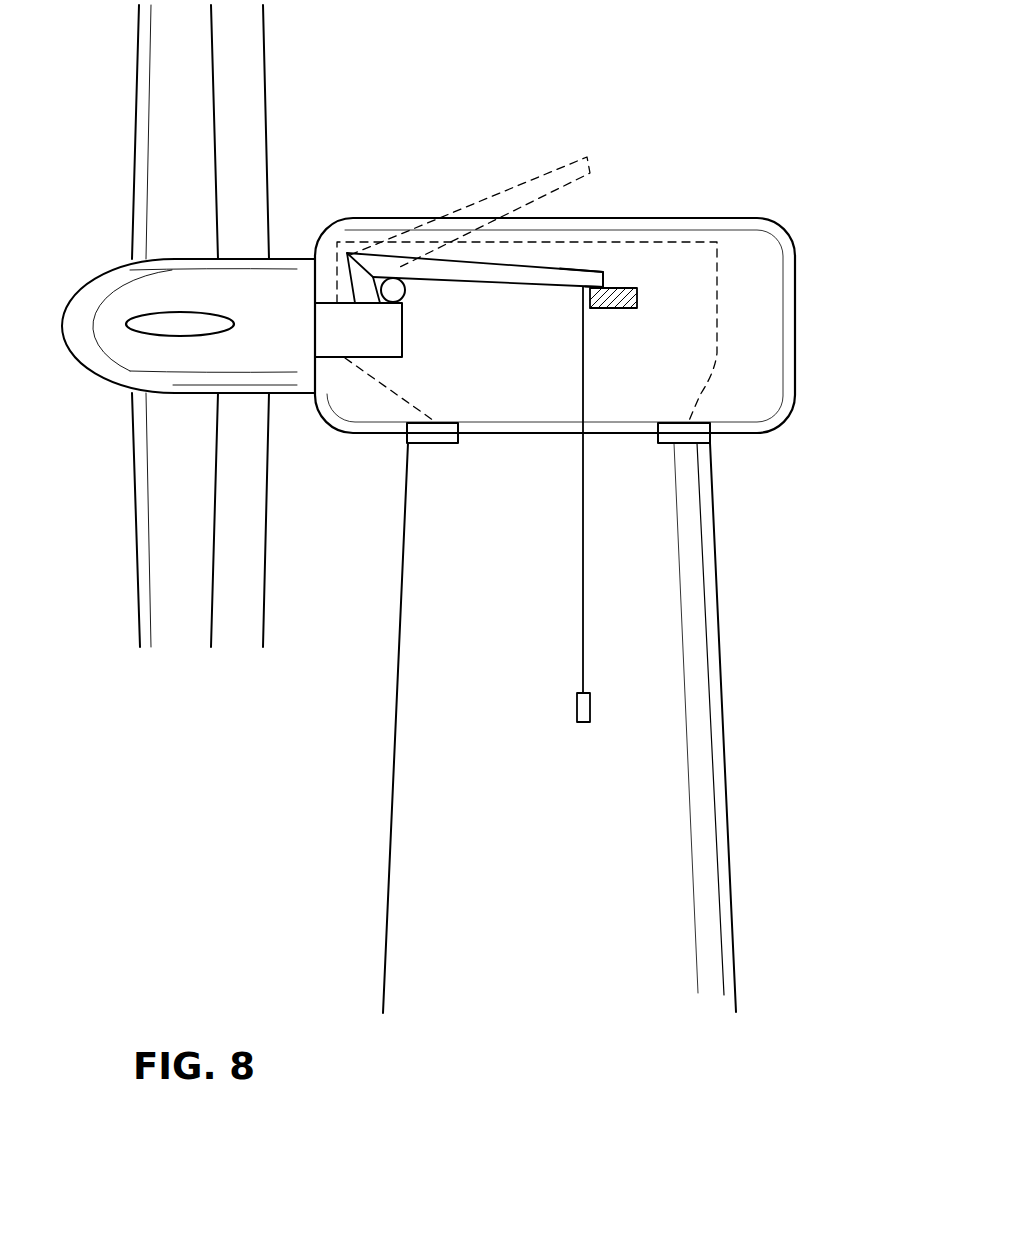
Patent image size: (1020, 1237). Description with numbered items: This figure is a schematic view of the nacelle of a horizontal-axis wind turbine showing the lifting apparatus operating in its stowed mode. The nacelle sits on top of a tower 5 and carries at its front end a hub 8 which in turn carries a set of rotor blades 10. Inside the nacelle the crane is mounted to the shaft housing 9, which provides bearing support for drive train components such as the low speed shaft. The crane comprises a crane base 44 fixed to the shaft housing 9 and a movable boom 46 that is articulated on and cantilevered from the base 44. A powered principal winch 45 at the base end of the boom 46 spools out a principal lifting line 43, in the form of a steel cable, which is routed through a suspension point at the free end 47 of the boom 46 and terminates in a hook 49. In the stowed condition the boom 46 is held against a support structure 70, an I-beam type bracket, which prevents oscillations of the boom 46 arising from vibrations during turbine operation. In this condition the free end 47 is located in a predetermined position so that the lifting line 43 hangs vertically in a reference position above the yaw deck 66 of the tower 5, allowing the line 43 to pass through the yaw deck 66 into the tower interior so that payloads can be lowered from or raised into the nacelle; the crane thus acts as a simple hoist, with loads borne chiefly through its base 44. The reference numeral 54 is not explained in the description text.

The tower 5 is at (723, 583).
The hub 8 is at (96, 278).
The shaft housing 9 is at (382, 358).
The rotor blades 10 is at (162, 323).
The principal lifting line 43 is at (583, 497).
The crane base 44 is at (362, 267).
The principal winch 45 is at (422, 280).
The boom 46 is at (545, 256).
The free end of the boom 47 is at (570, 268).
The hook 49 is at (590, 705).
The nacelle cover 54 is at (717, 298).
The yaw deck 66 is at (700, 417).
The support structure 70 is at (630, 287).